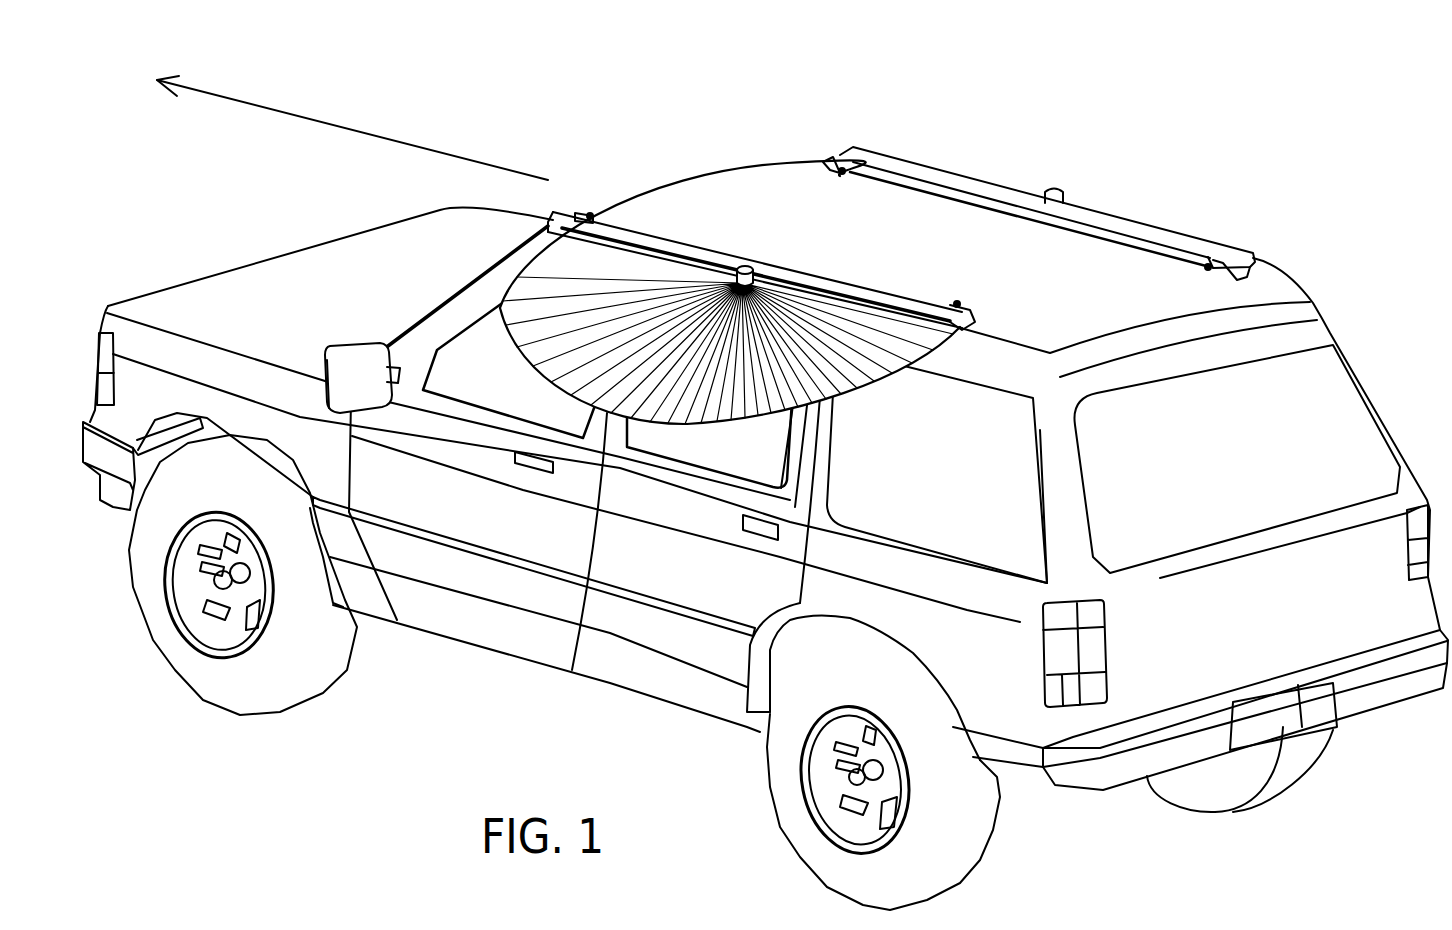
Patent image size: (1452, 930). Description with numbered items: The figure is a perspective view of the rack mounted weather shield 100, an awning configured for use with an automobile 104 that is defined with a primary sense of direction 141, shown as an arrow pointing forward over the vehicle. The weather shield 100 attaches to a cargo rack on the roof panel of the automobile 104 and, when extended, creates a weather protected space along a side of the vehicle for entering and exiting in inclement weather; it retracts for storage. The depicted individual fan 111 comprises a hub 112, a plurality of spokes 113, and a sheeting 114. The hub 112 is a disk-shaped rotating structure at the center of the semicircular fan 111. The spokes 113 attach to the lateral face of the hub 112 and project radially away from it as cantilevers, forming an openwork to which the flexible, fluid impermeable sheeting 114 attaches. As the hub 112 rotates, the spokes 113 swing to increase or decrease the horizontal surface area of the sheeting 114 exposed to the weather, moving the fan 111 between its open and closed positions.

The rack mounted weather shield 100 is at (580, 122).
The automobile 104 is at (1337, 600).
The individual fan 111 is at (883, 373).
The hub 112 is at (750, 266).
The plurality of spokes 113 is at (856, 332).
The sheeting 114 is at (836, 370).
The primary sense of direction 141 is at (354, 128).